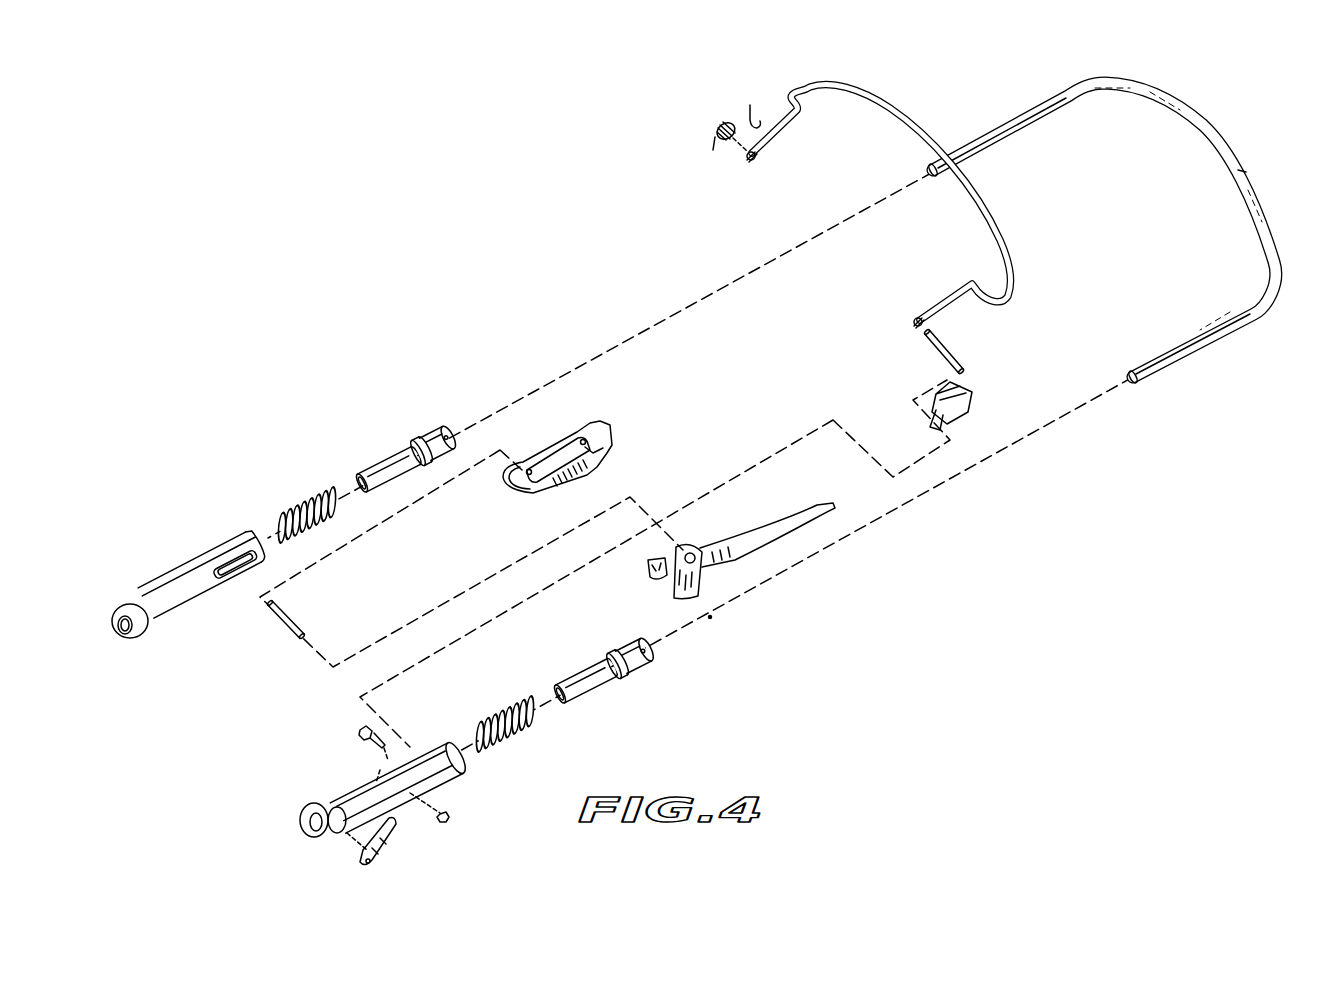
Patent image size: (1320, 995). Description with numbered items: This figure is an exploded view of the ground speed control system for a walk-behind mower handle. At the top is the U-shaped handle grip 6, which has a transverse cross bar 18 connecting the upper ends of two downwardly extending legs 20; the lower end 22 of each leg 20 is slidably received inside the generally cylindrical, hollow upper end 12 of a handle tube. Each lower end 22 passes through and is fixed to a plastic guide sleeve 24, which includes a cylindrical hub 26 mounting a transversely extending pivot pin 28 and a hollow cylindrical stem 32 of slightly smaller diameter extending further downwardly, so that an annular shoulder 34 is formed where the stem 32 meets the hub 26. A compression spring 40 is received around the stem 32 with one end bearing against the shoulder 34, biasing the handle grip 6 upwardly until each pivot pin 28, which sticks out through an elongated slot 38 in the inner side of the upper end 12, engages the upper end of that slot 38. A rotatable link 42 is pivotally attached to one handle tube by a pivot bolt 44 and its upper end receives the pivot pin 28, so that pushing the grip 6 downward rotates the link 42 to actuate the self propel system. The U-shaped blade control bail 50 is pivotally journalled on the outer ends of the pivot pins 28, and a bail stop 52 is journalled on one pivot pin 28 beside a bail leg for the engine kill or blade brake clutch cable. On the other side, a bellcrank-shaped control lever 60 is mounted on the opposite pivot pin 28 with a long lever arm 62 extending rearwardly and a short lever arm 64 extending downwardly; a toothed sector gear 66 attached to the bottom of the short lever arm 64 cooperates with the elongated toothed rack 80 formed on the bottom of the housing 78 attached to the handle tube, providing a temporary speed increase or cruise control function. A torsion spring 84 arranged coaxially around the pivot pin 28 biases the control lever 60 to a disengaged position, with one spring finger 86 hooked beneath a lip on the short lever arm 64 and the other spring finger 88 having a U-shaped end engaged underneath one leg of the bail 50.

The handle grip 6 is at (1101, 247).
The upper end 12 is at (317, 673).
The transverse cross bar 18 is at (1243, 173).
The leg 20 is at (1000, 126).
The lower end 22 is at (945, 180).
The guide sleeve 24 is at (503, 546).
The cylindrical hub 26 is at (554, 531).
The pivot pin 28 is at (950, 347).
The stem 32 is at (362, 467).
The annular shoulder 34 is at (620, 675).
The elongated slot 38 is at (235, 564).
The compression spring 40 is at (290, 503).
The rotatable link 42 is at (390, 847).
The pivot bolt 44 is at (358, 730).
The blade control bail 50 is at (886, 88).
The bail stop 52 is at (973, 400).
The control lever 60 is at (767, 537).
The long lever arm 62 is at (767, 543).
The short lever arm 64 is at (693, 580).
The sector gear 66 is at (645, 577).
The housing 78 is at (568, 462).
The toothed rack 80 is at (553, 503).
The spring 84 is at (717, 124).
The spring finger 86 is at (713, 150).
The spring finger 88 is at (750, 105).